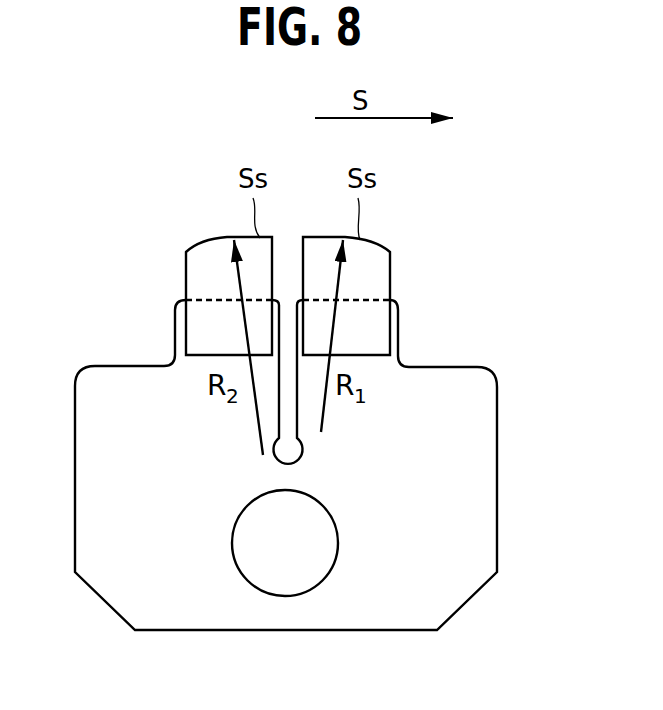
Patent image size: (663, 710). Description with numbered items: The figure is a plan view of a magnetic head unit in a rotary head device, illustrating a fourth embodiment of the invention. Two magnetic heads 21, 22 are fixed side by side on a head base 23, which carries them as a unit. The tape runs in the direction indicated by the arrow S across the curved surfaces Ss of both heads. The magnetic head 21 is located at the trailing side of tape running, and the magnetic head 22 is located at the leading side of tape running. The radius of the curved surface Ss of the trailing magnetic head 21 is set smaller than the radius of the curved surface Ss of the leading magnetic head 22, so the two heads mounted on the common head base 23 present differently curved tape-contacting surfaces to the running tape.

The magnetic head 21 is at (358, 283).
The magnetic head 22 is at (205, 255).
The head base 23 is at (470, 490).